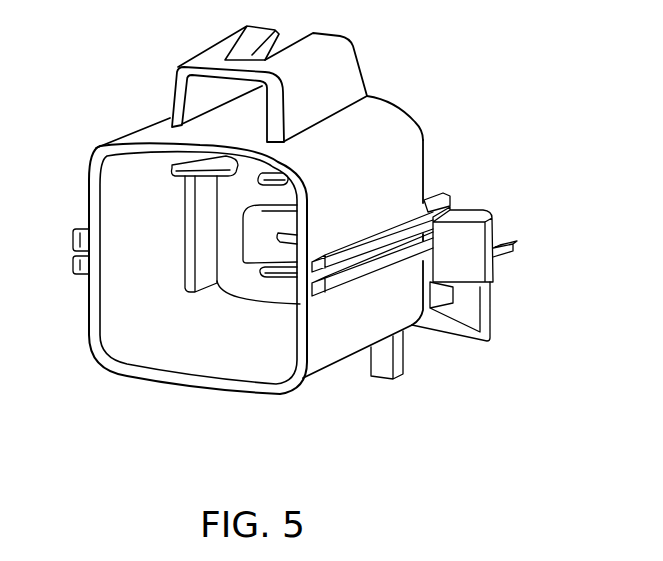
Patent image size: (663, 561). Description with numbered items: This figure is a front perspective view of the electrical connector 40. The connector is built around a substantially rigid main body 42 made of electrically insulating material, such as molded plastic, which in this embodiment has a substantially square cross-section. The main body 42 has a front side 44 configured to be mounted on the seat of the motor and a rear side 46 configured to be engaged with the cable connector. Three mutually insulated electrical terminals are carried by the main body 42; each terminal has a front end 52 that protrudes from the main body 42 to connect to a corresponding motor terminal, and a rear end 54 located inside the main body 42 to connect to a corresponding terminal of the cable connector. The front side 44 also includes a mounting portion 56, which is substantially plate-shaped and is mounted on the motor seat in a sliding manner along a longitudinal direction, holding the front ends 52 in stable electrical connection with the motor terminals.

The electrical connector 40 is at (268, 233).
The main body 42 is at (353, 317).
The front side 44 is at (424, 130).
The rear side 46 is at (221, 356).
The front end 52 is at (507, 250).
The rear end 54 is at (262, 186).
The mounting portion 56 is at (467, 310).